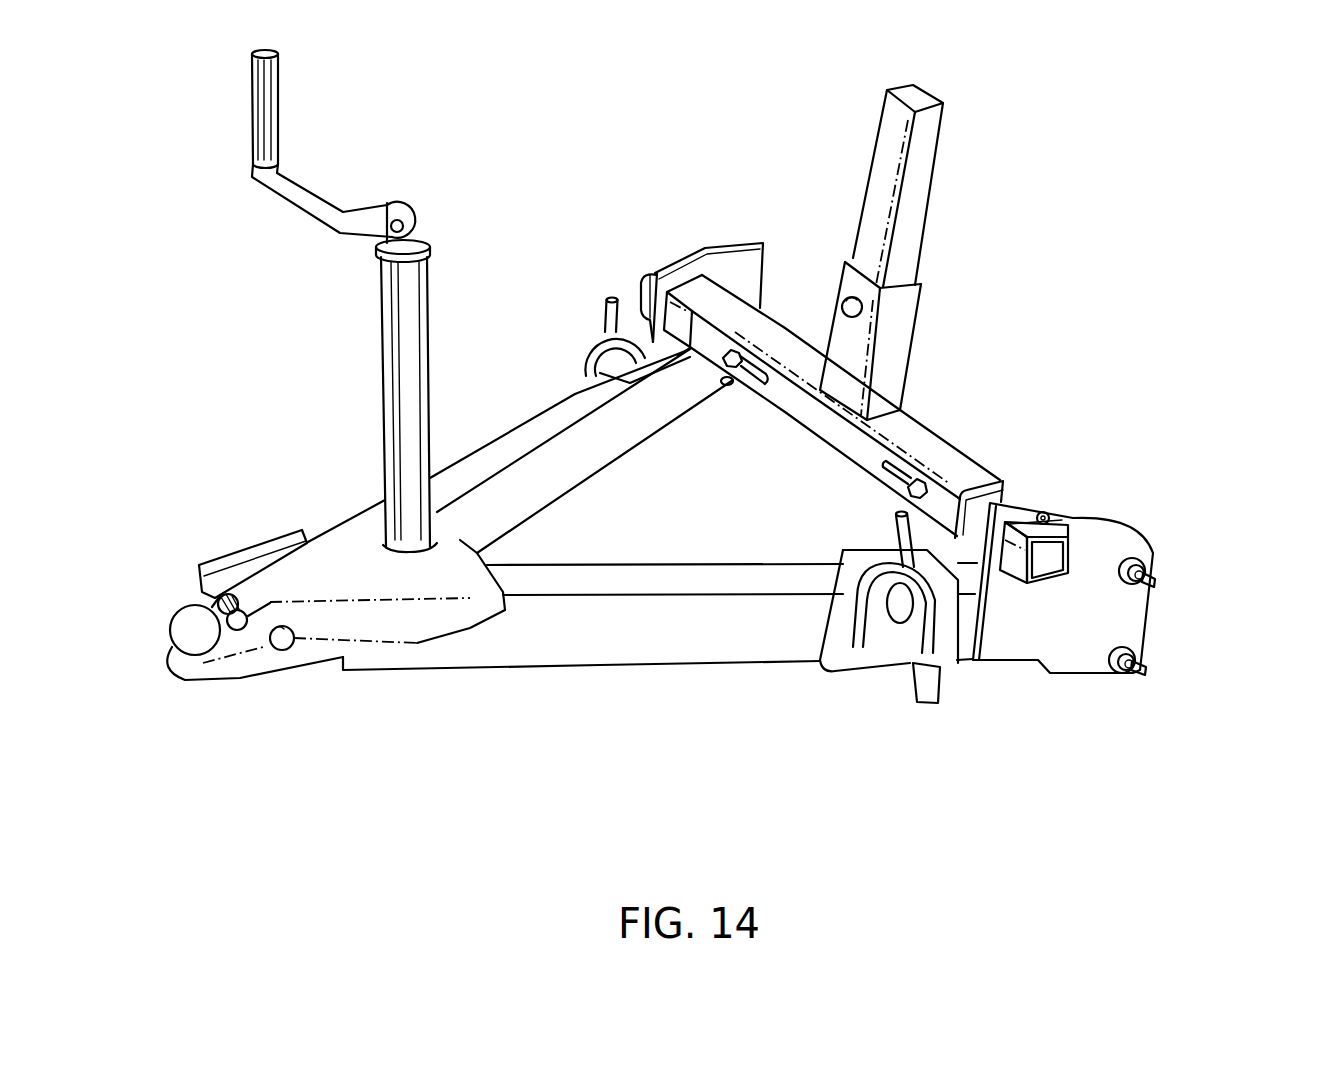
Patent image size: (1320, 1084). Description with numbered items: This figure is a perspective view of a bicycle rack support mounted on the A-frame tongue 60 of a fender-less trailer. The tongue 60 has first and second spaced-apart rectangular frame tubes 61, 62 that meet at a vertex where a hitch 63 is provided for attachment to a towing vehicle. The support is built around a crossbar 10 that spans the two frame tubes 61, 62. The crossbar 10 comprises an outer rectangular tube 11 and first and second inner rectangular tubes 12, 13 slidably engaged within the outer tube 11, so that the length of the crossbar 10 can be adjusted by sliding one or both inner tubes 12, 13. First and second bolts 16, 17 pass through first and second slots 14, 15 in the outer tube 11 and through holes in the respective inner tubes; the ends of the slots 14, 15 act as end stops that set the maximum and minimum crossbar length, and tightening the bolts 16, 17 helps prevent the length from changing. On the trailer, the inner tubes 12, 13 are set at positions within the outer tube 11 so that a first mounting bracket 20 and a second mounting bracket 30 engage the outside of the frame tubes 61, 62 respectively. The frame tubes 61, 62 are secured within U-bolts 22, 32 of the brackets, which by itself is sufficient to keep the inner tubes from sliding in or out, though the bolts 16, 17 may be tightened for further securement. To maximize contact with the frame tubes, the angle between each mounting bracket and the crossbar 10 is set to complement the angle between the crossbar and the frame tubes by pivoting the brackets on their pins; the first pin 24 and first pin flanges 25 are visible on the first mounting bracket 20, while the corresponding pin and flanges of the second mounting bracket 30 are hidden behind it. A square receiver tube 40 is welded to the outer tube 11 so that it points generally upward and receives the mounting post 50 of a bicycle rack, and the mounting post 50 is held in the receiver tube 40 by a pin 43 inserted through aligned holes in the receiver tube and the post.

The crossbar 10 is at (863, 406).
The outer rectangular tube 11 is at (940, 450).
The first inner rectangular tube 12 is at (997, 493).
The second inner rectangular tube 13 is at (646, 272).
The first slot 14 is at (883, 468).
The second slot 15 is at (743, 377).
The first bolt 16 is at (905, 490).
The second bolt 17 is at (731, 386).
The first mounting bracket 20 is at (1022, 632).
The U-bolt 22 is at (1157, 568).
The first pin 24 is at (1047, 513).
The first pin flanges 25 is at (1063, 517).
The second mounting bracket 30 is at (727, 263).
The U-bolt 32 is at (710, 407).
The square receiver tube 40 is at (897, 320).
The pin 43 is at (840, 300).
The mounting post 50 is at (923, 168).
The trailer tongue 60 is at (456, 722).
The first rectangular frame tube 61 is at (577, 643).
The second rectangular frame tube 62 is at (547, 427).
The hitch 63 is at (202, 640).